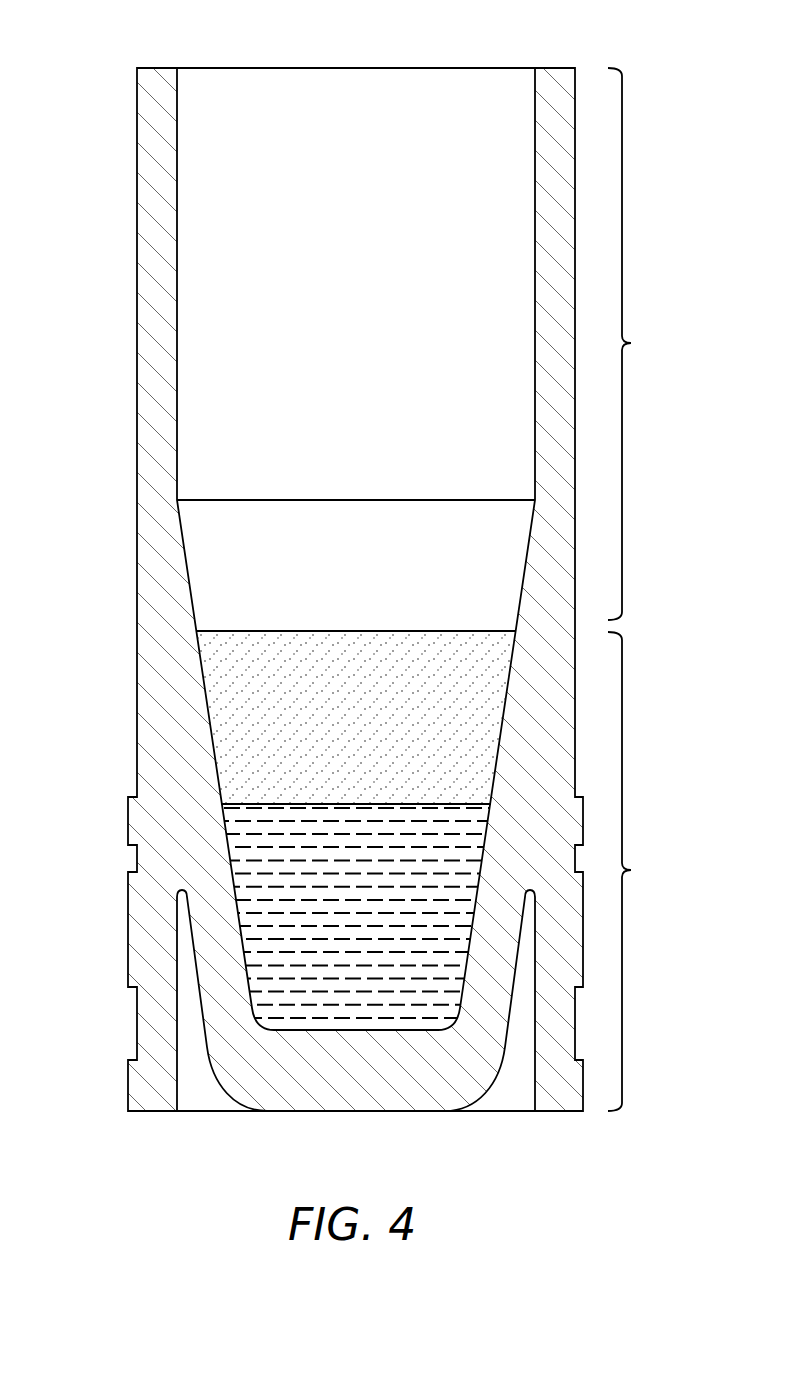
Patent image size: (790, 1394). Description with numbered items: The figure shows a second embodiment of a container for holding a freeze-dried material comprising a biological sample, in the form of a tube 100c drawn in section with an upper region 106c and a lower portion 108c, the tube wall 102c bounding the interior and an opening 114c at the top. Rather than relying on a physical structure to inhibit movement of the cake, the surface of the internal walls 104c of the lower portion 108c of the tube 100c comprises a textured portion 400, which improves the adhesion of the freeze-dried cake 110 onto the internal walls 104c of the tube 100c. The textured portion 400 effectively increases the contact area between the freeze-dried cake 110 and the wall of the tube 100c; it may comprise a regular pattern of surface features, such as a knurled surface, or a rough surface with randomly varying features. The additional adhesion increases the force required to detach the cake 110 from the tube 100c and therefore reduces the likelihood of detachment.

The tube 100c is at (146, 99).
The container wall 102c is at (194, 358).
The internal walls 104c is at (177, 183).
The upper portion 106c is at (649, 344).
The lower portion 108c is at (649, 871).
The freeze-dried cake 110 is at (357, 992).
The top opening 114c is at (353, 68).
The textured portion 400 is at (230, 694).